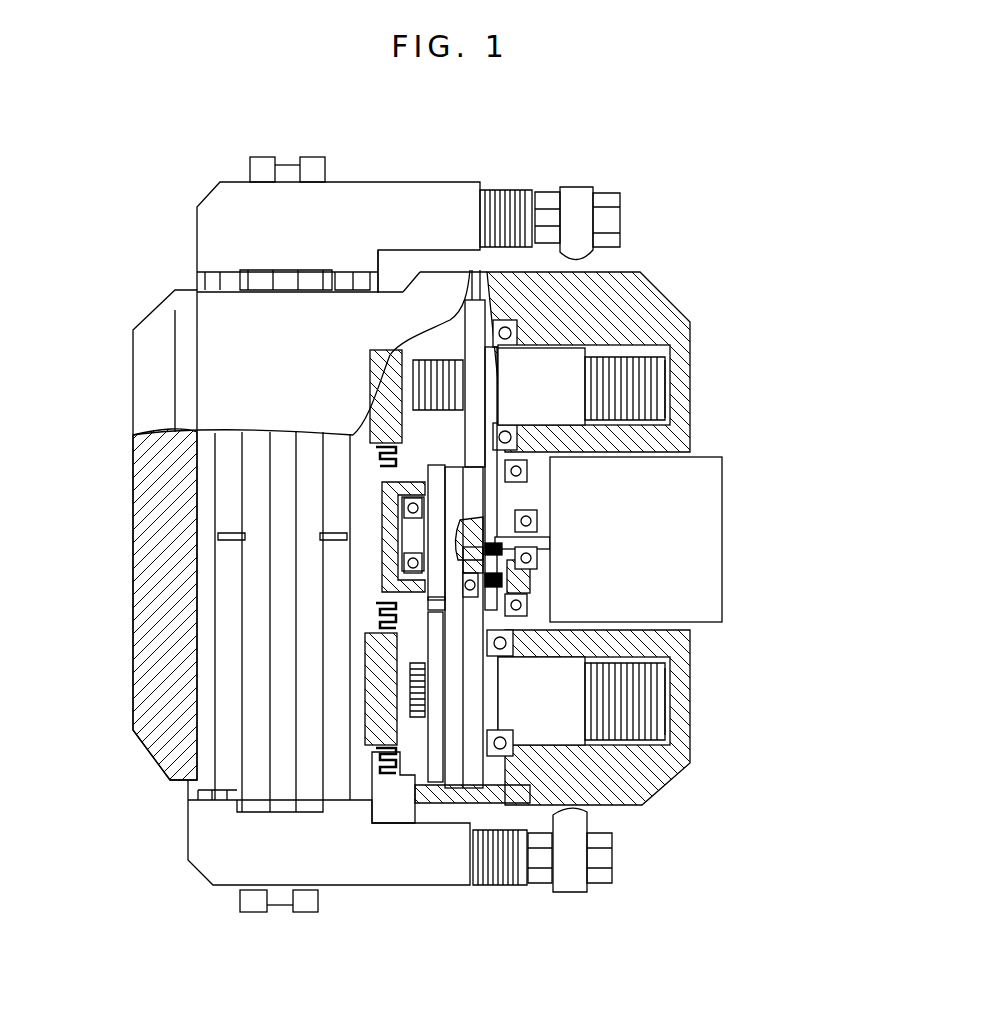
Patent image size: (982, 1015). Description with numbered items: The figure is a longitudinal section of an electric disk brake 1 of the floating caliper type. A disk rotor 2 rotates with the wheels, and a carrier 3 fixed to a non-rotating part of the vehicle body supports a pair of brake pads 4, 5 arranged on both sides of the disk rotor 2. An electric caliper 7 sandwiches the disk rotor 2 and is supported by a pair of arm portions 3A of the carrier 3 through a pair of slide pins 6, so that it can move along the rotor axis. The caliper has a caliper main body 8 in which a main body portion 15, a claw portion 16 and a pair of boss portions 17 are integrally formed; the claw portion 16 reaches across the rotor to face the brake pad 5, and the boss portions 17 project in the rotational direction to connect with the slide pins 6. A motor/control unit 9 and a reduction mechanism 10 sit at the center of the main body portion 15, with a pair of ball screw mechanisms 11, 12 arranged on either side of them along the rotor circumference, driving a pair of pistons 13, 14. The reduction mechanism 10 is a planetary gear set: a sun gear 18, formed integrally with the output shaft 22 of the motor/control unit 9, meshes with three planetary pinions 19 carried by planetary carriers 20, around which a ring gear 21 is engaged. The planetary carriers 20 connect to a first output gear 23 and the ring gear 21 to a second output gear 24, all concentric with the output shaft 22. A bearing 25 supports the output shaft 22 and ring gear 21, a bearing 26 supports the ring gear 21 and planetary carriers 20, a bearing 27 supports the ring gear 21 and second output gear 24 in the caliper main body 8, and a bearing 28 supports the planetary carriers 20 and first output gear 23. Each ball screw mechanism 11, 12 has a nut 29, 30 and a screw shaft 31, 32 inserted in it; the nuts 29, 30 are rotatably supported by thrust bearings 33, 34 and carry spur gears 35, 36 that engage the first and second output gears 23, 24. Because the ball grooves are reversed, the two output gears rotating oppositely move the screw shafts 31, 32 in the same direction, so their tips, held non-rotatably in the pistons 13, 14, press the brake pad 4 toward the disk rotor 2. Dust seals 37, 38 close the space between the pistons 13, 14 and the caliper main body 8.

The electric disk brake 1 is at (684, 182).
The disk rotor 2 is at (312, 163).
The carrier 3 is at (218, 233).
The arm portion 3A is at (383, 208).
The brake pad 4 is at (340, 784).
The brake pad 5 is at (227, 775).
The slide pin 6 is at (606, 195).
The electric caliper 7 is at (674, 298).
The caliper main body 8 is at (628, 288).
The motor/control unit 9 is at (690, 552).
The reduction mechanism 10 is at (520, 603).
The ball screw mechanism 11 is at (650, 706).
The ball screw mechanism 12 is at (670, 392).
The piston 13 is at (362, 752).
The piston 14 is at (397, 352).
The main body portion 15 is at (540, 292).
The claw portion 16 is at (160, 540).
The boss portion 17 is at (577, 207).
The sun gear 18 is at (527, 490).
The planetary pinion 19 is at (530, 578).
The planetary carrier 20 is at (460, 585).
The ring gear 21 is at (478, 607).
The output shaft 22 is at (547, 538).
The first output gear 23 is at (433, 497).
The second output gear 24 is at (475, 483).
The bearing 25 is at (542, 565).
The bearing 26 is at (483, 548).
The bearing 27 is at (560, 640).
The bearing 28 is at (455, 575).
The nut 29 is at (622, 742).
The nut 30 is at (567, 367).
The screw shaft 31 is at (657, 740).
The screw shaft 32 is at (633, 377).
The thrust bearing 33 is at (510, 838).
The thrust bearing 34 is at (493, 320).
The spur gear 35 is at (437, 784).
The spur gear 36 is at (476, 298).
The dust seal 37 is at (408, 760).
The dust seal 38 is at (383, 372).